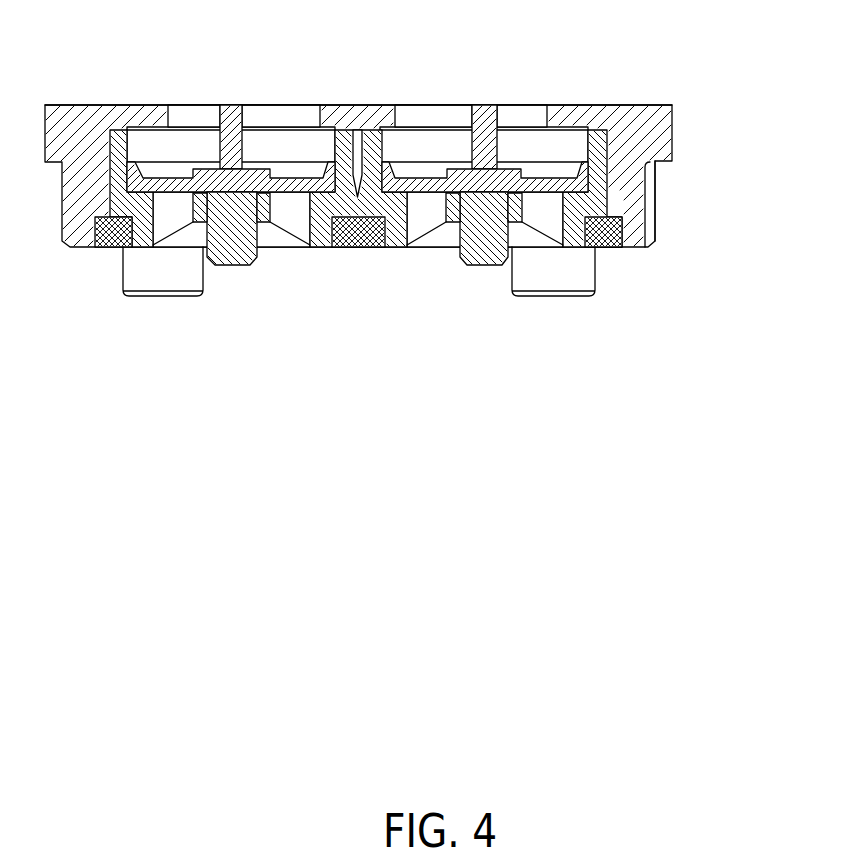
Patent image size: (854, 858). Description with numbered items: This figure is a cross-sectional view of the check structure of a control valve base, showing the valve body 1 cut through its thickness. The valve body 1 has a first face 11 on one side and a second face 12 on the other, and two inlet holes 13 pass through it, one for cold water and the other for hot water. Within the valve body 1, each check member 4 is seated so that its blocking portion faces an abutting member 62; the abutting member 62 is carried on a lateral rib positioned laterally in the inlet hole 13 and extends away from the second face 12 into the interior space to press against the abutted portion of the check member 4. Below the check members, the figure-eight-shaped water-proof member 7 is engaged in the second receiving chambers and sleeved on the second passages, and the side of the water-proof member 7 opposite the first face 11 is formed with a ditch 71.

The valve body 1 is at (690, 100).
The first face 11 is at (660, 165).
The second face 12 is at (617, 105).
The inlet hole 13 is at (204, 93).
The check member 4 is at (230, 262).
The abutting member 62 is at (232, 123).
The water-proof member 7 is at (100, 248).
The ditch 71 is at (373, 248).